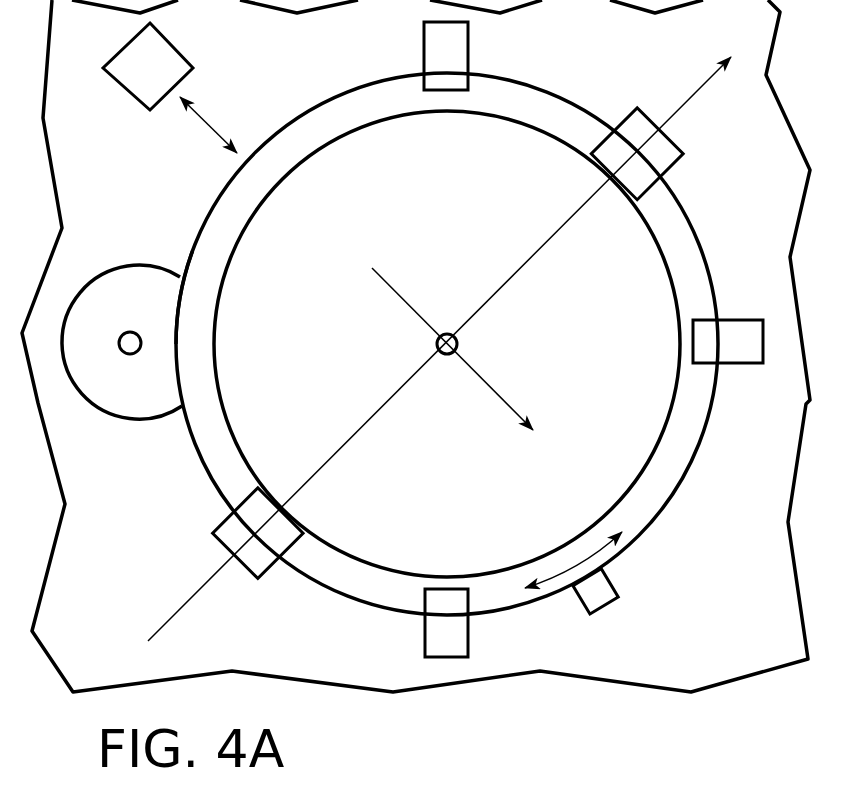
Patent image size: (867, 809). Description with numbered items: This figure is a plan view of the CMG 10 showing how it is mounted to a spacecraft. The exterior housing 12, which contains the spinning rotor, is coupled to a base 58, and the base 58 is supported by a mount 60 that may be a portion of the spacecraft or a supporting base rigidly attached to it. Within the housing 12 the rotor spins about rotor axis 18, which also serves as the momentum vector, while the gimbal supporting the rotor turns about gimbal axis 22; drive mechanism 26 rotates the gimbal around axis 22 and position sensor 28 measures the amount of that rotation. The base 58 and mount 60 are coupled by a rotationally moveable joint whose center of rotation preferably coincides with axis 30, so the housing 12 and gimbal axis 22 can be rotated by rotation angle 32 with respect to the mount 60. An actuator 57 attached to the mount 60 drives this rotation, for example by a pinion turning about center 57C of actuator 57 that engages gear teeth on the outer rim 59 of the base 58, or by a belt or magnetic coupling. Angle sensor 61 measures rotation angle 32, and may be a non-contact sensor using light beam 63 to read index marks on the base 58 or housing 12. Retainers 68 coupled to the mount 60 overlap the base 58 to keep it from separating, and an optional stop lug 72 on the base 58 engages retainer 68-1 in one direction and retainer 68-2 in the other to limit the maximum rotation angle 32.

The CMG 10 is at (723, 737).
The exterior housing 12 is at (437, 200).
The rotor axis 18 is at (502, 402).
The gimbal axis of rotation 22 is at (683, 107).
The drive mechanism 26 is at (623, 108).
The position sensor 28 is at (220, 517).
The axis 30 is at (466, 347).
The rotation angle 32 is at (570, 565).
The actuator 57 is at (125, 263).
The center of actuator 57C is at (120, 352).
The base 58 is at (681, 227).
The outer rim 59 is at (200, 220).
The mount 60 is at (753, 644).
The angle sensor 61 is at (118, 85).
The light beam 63 is at (213, 127).
The retainers 68 is at (424, 52).
The retainer 68-1 is at (425, 630).
The retainer 68-2 is at (748, 363).
The stop lug 72 is at (598, 613).